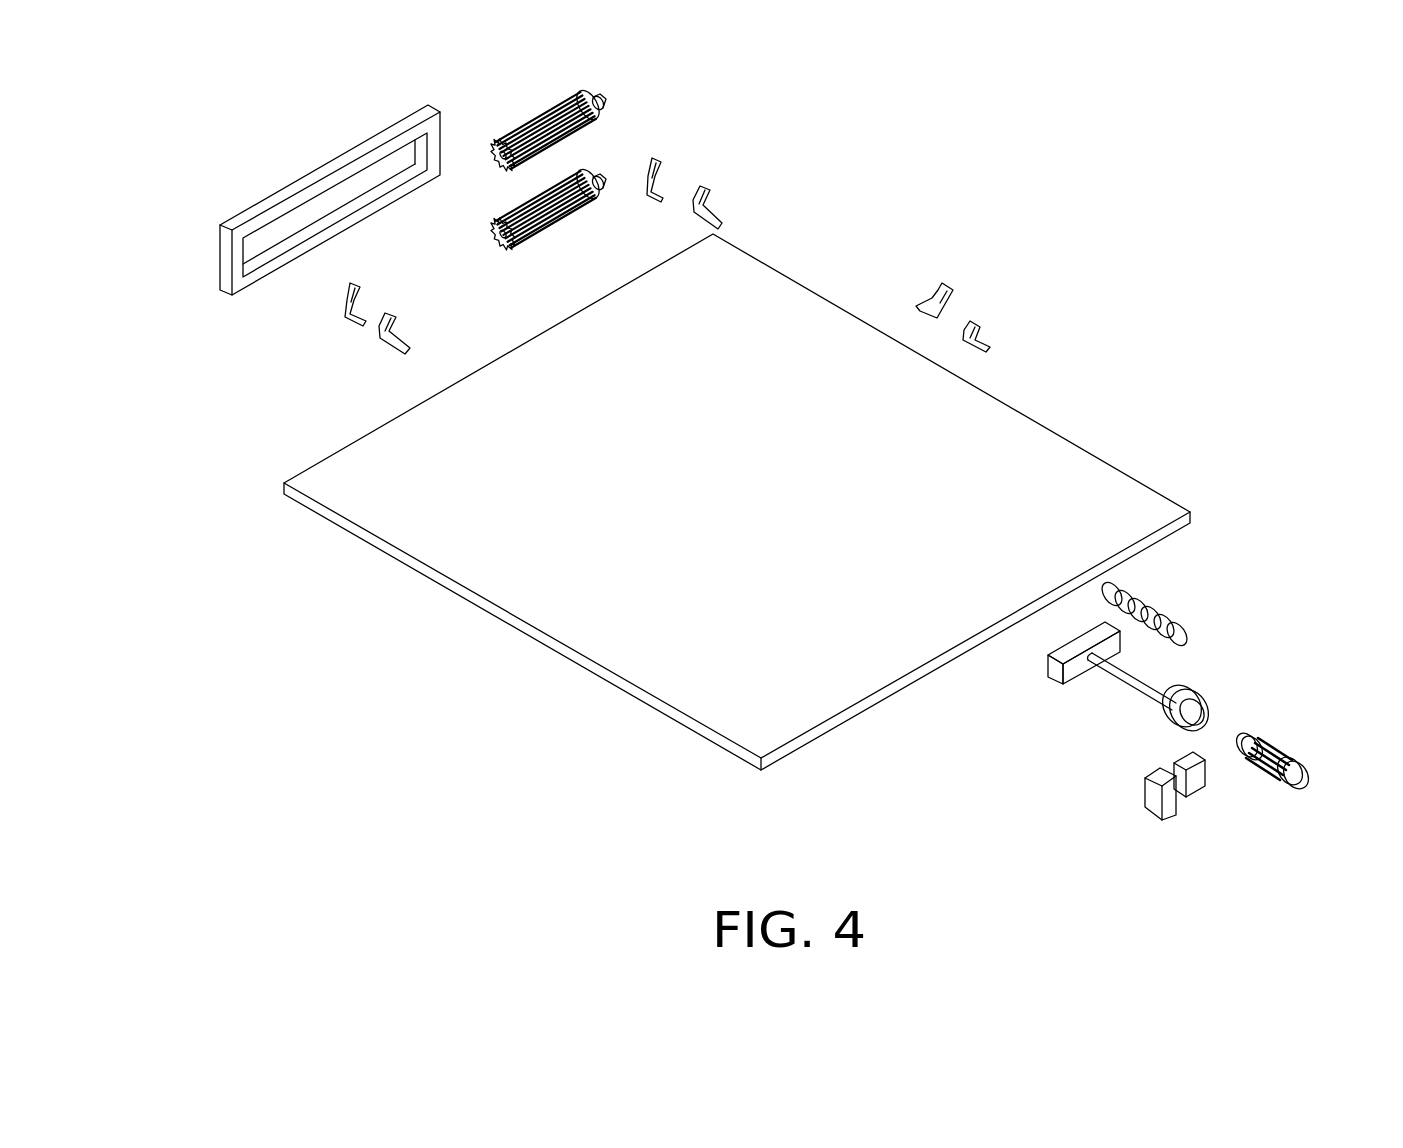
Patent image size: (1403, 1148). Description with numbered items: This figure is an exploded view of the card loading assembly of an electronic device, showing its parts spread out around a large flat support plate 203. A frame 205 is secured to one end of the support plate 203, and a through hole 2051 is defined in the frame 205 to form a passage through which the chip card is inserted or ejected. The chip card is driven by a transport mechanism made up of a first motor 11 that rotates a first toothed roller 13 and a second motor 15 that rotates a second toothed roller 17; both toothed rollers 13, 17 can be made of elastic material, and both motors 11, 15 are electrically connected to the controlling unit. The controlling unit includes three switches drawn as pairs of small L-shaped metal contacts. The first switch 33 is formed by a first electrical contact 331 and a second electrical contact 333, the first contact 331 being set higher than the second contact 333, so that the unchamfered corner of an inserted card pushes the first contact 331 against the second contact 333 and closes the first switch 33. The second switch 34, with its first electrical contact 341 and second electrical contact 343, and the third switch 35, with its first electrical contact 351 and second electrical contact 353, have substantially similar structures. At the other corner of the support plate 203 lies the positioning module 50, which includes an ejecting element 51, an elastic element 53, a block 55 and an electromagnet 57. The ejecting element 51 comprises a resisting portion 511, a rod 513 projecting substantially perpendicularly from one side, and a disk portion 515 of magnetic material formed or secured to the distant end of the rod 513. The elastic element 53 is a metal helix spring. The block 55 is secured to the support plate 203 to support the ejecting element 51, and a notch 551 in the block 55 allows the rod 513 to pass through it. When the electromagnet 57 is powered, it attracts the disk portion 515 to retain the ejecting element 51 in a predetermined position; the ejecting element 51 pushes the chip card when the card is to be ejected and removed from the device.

The support plate 203 is at (762, 322).
The frame 205 is at (377, 138).
The through hole 2051 is at (333, 197).
The first motor 11 is at (598, 97).
The first toothed roller 13 is at (530, 130).
The second motor 15 is at (604, 178).
The second toothed roller 17 is at (497, 250).
The first switch 33 is at (265, 327).
The first electrical contact 331 is at (348, 323).
The second electrical contact 333 is at (387, 350).
The second switch 34 is at (800, 135).
The first electrical contact 341 is at (667, 162).
The second electrical contact 343 is at (715, 187).
The third switch 35 is at (1068, 270).
The first electrical contact 351 is at (948, 297).
The second electrical contact 353 is at (993, 335).
The positioning module 50 is at (1238, 558).
The ejecting element 51 is at (1210, 680).
The resisting portion 511 is at (1072, 680).
The rod 513 is at (1132, 702).
The disk portion 515 is at (1172, 732).
The elastic element 53 is at (1167, 603).
The block 55 is at (1195, 752).
The notch 551 is at (1183, 792).
The electromagnet 57 is at (1275, 742).